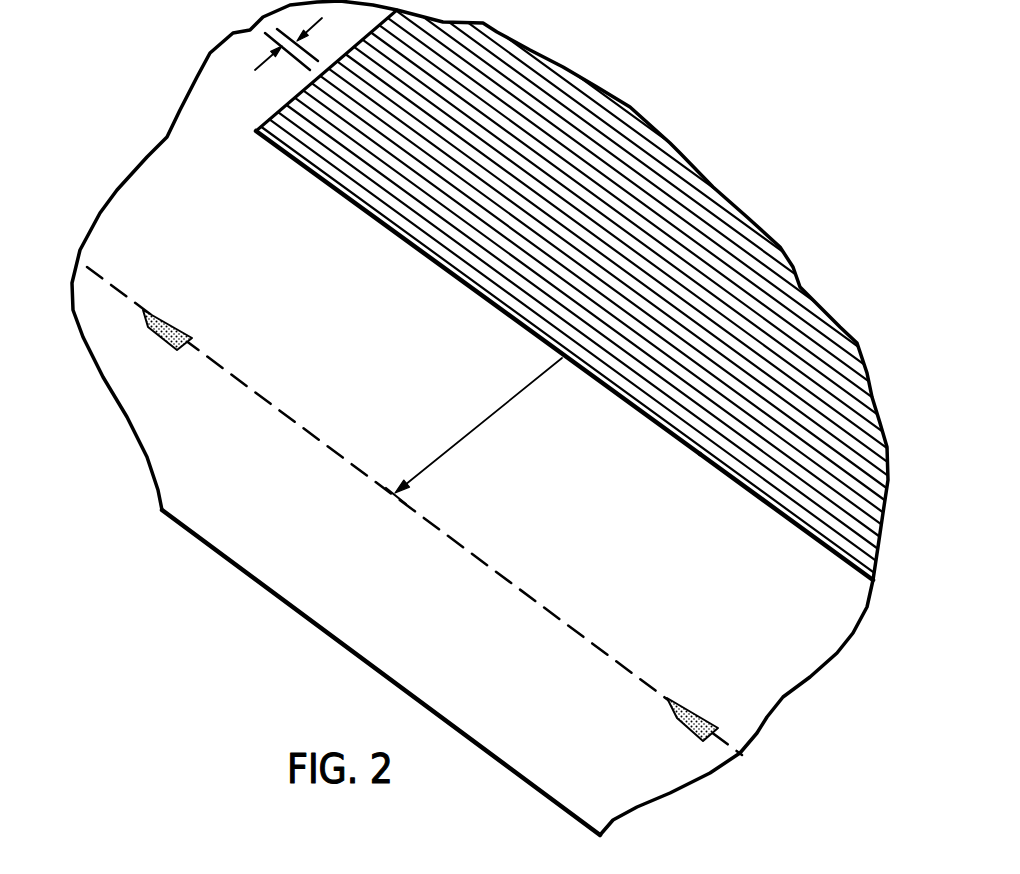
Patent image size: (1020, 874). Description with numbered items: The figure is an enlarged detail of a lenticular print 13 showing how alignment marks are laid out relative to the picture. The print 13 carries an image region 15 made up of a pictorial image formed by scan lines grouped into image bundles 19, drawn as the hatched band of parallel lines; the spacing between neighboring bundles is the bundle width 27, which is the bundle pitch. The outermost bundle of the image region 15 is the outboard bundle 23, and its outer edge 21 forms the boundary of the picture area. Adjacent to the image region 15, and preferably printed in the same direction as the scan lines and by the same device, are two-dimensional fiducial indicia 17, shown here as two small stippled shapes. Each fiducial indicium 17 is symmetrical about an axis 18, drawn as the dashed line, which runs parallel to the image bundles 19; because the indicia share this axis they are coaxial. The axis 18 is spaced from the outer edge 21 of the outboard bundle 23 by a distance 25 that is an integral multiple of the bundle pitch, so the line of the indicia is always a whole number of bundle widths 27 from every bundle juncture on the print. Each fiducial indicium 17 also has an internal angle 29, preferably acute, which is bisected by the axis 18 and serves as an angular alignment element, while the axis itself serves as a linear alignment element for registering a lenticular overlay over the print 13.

The lenticular print 13 is at (150, 100).
The image region 15 is at (725, 178).
The two-dimensional fiducial indicia 17 is at (175, 347).
The axis 18 is at (130, 300).
The bundles of image lines 19 is at (795, 332).
The outer edge 21 is at (787, 523).
The outboard bundle 23 is at (673, 432).
The distance 25 is at (468, 436).
The width of bundle 27 is at (266, 64).
The internal angle 29 is at (143, 310).